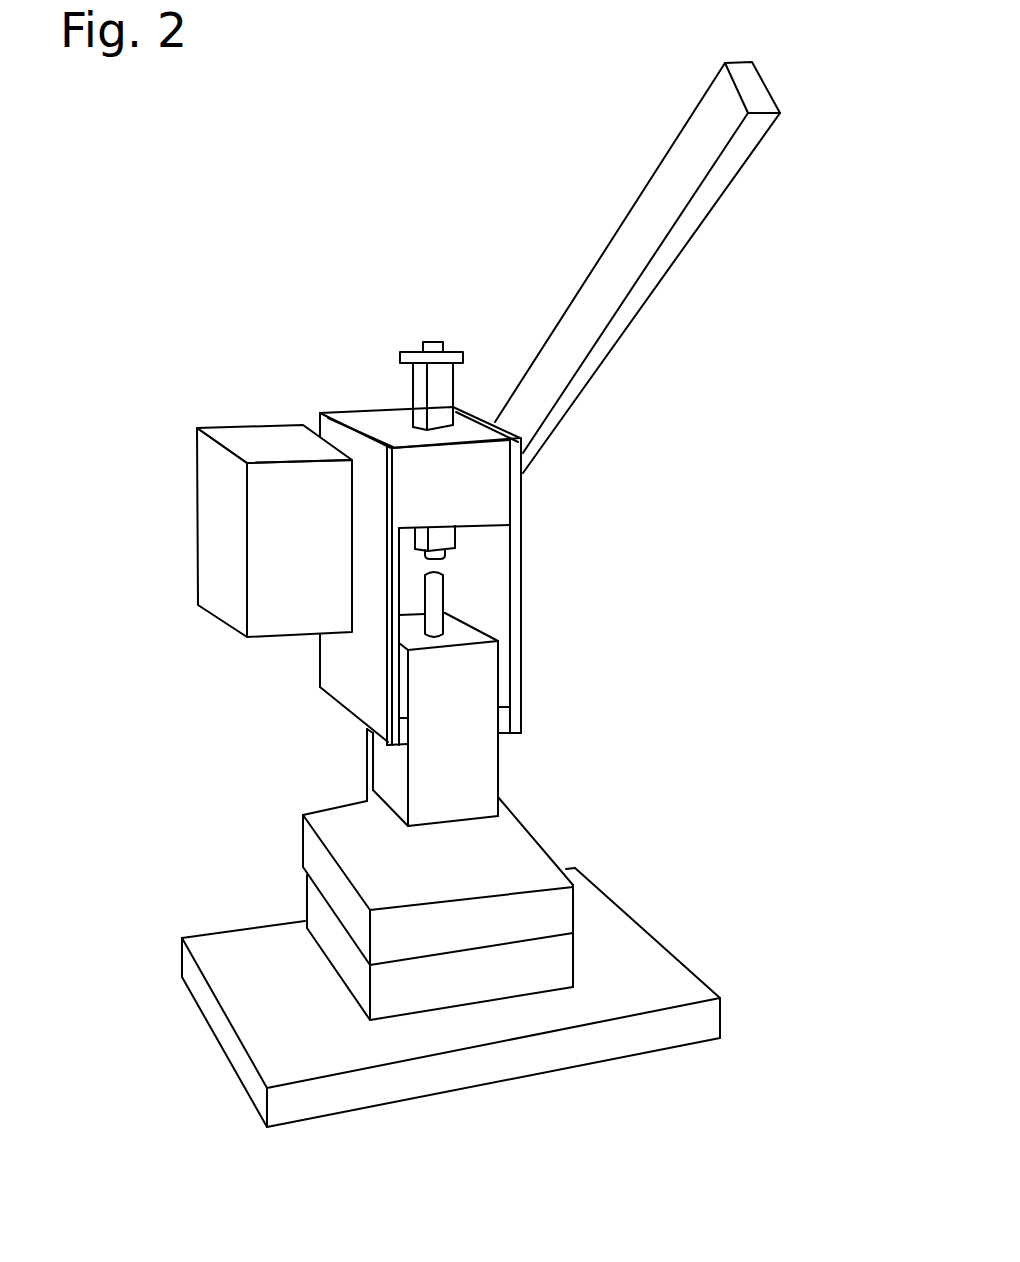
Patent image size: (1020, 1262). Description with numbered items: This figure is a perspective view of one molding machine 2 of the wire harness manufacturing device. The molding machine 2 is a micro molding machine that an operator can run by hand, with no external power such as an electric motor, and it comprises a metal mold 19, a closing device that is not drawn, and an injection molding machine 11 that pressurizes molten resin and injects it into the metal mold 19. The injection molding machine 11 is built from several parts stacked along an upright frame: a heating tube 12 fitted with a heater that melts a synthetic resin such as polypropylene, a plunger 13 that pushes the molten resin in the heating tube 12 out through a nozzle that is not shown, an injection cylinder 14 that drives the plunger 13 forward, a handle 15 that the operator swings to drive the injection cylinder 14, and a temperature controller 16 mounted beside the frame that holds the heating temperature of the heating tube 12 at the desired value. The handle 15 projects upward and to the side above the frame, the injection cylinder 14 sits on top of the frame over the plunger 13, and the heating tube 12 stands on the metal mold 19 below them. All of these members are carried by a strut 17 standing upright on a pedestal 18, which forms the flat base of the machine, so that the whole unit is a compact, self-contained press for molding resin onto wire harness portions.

The molding machine 2 is at (367, 116).
The injection molding machine 11 is at (552, 529).
The heating tube 12 is at (500, 760).
The plunger 13 is at (433, 600).
The injection cylinder 14 is at (412, 388).
The handle 15 is at (721, 197).
The temperature controller 16 is at (222, 523).
The strut 17 is at (366, 762).
The pedestal 18 is at (680, 960).
The metal mold 19 is at (294, 865).